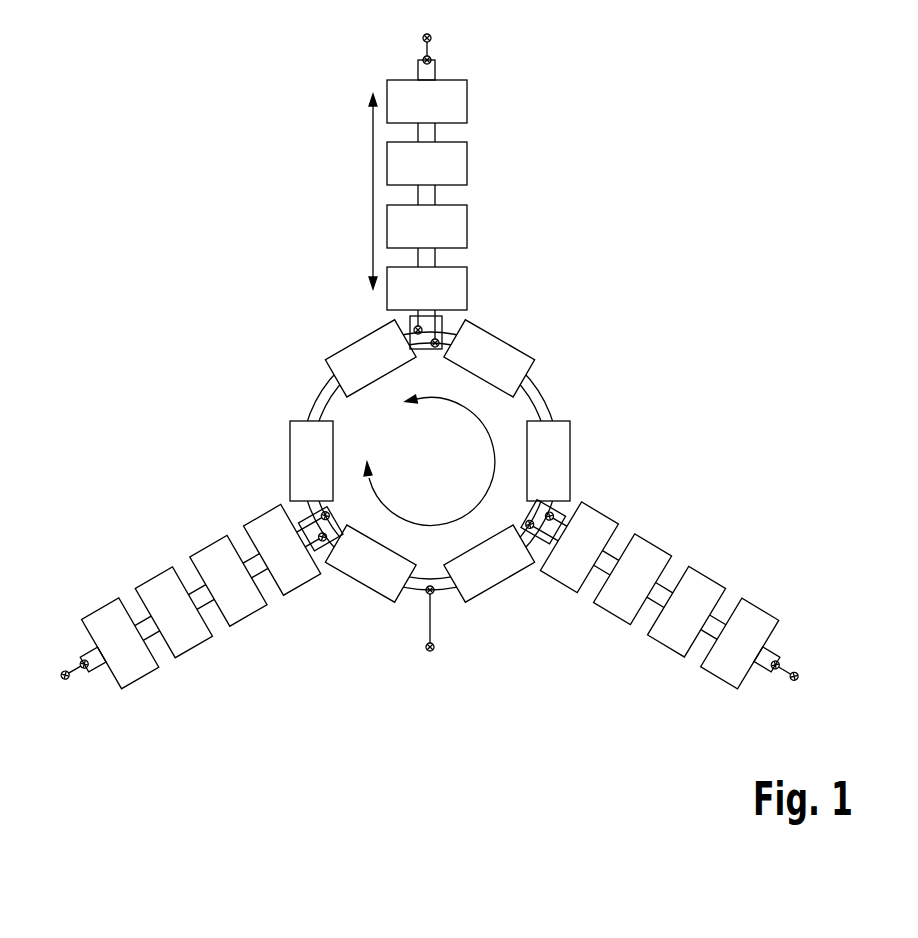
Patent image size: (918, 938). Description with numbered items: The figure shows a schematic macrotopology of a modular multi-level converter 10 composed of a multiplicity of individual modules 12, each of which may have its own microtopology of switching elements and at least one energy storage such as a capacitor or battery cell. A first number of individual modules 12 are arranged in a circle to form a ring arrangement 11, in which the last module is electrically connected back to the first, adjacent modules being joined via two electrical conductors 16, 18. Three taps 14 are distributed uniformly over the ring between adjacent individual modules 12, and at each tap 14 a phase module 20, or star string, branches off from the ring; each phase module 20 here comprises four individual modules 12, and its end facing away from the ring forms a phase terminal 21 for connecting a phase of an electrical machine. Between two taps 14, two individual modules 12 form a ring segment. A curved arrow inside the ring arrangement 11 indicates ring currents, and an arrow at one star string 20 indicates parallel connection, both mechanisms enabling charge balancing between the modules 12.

The modular multi-level converter 10 is at (700, 251).
The ring arrangement 11 is at (436, 458).
The individual module 12 is at (518, 343).
The tap 14 is at (410, 323).
The electrical conductor 16 is at (326, 404).
The electrical conductor 18 is at (313, 403).
The phase module 20 is at (430, 374).
The phase terminal 21 is at (432, 45).